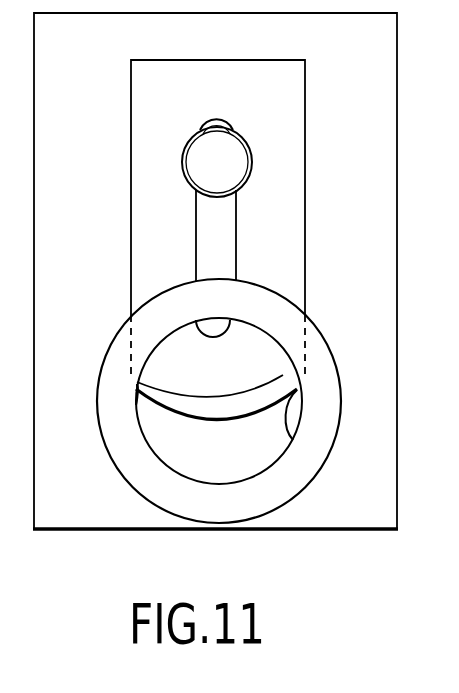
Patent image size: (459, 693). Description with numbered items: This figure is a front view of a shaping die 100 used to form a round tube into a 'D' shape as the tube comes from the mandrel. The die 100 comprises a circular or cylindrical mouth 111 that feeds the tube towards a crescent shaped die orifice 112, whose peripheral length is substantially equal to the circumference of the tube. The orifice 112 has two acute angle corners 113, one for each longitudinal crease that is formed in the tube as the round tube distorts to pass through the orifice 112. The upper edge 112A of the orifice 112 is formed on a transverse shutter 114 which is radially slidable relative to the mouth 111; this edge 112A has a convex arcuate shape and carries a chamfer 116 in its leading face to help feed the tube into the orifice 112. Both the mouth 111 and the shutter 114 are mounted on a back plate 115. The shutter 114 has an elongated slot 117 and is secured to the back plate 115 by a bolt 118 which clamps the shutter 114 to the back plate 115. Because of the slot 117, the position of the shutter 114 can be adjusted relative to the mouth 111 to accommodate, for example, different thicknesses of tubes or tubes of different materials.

The shaping die 100 is at (104, 306).
The mouth 111 is at (258, 494).
The die orifice 112 is at (228, 468).
The upper edge 112A is at (136, 405).
The acute angle corners 113 is at (137, 420).
The transverse shutter 114 is at (291, 178).
The back plate 115 is at (369, 70).
The chamfer 116 is at (268, 380).
The elongated slot 117 is at (226, 260).
The bolt 118 is at (200, 163).